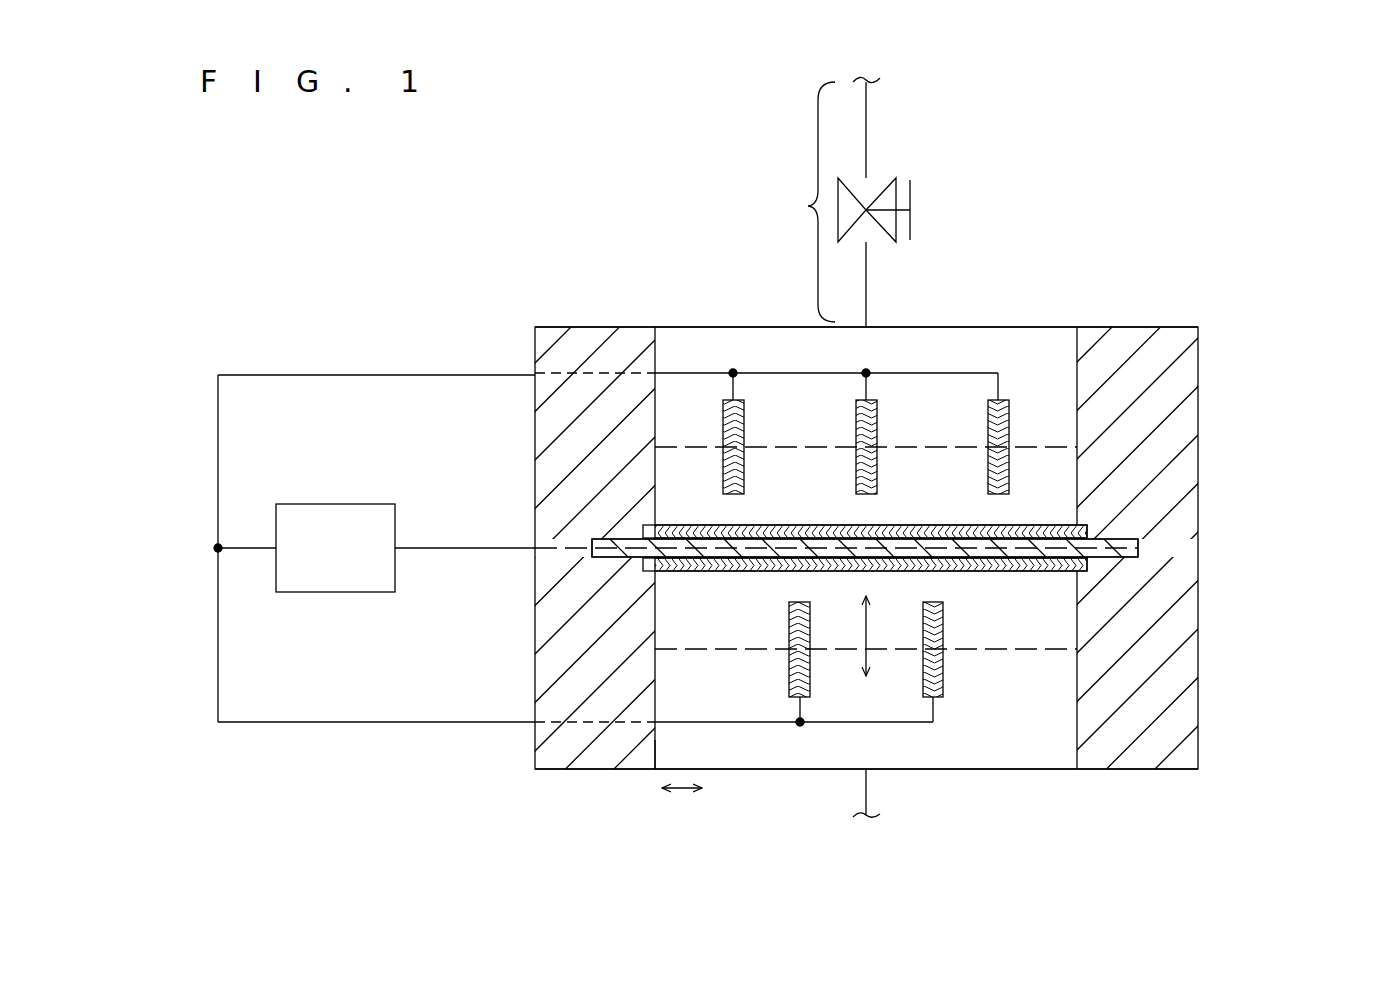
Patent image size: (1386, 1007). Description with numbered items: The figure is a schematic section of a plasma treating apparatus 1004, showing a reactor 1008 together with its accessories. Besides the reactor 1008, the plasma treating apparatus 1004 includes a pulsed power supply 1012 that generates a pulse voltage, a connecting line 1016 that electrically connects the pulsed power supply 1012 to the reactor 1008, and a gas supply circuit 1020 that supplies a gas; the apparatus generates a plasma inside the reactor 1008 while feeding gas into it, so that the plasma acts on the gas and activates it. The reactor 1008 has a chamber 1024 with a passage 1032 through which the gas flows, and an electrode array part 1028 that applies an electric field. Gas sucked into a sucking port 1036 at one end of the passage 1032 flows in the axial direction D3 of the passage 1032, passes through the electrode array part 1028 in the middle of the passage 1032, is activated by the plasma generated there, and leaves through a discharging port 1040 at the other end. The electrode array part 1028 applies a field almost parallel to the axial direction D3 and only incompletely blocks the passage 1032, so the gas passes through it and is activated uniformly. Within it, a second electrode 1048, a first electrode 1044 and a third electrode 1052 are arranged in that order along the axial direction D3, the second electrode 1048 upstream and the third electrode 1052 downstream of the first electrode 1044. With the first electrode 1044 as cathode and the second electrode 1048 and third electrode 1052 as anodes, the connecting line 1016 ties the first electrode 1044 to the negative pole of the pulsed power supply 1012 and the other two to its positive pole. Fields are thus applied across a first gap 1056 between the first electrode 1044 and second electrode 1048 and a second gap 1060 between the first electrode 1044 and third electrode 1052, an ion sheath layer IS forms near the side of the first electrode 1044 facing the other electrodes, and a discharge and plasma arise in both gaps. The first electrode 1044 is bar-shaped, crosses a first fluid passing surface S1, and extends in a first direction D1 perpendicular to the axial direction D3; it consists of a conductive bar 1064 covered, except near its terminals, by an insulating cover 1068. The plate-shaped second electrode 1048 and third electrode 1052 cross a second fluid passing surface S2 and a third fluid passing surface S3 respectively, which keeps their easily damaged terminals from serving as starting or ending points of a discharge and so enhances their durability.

The plasma treating apparatus 1004 is at (1098, 245).
The reactor 1008 is at (1208, 745).
The pulsed power supply 1012 is at (318, 505).
The connecting line 1016 is at (243, 547).
The gas supply circuit 1020 is at (810, 206).
The chamber 1024 is at (1198, 427).
The electrode array part 1028 is at (760, 627).
The passage 1032 is at (1010, 770).
The sucking port 1036 is at (1030, 327).
The discharging port 1040 is at (768, 770).
The first electrode 1044 is at (1030, 571).
The second electrode 1048 is at (745, 414).
The third electrode 1052 is at (922, 687).
The first gap 1056 is at (868, 512).
The second gap 1060 is at (797, 583).
The bar 1064 is at (1138, 545).
The cover 1068 is at (1087, 535).
The first fluid passing surface S1 is at (823, 548).
The second fluid passing surface S2 is at (663, 447).
The third fluid passing surface S3 is at (1026, 650).
The ion sheath layer IS is at (1032, 525).
The first direction D1 is at (682, 808).
The axial direction D3 is at (886, 631).